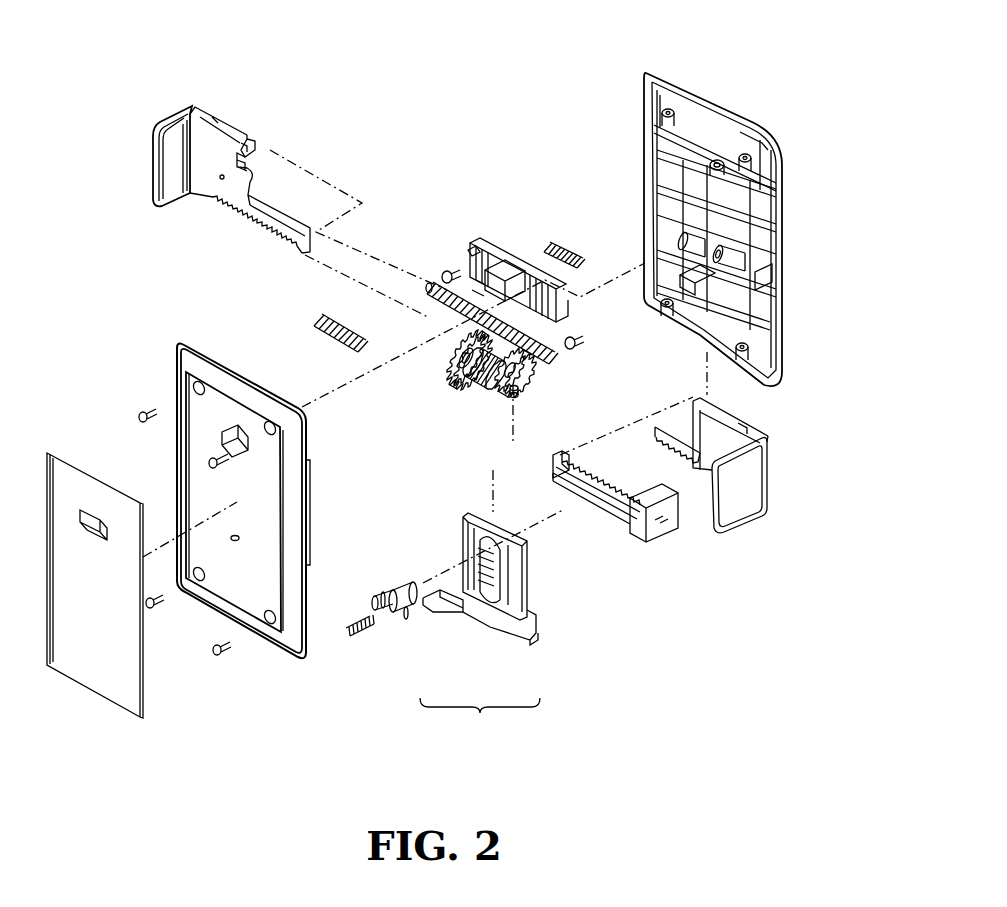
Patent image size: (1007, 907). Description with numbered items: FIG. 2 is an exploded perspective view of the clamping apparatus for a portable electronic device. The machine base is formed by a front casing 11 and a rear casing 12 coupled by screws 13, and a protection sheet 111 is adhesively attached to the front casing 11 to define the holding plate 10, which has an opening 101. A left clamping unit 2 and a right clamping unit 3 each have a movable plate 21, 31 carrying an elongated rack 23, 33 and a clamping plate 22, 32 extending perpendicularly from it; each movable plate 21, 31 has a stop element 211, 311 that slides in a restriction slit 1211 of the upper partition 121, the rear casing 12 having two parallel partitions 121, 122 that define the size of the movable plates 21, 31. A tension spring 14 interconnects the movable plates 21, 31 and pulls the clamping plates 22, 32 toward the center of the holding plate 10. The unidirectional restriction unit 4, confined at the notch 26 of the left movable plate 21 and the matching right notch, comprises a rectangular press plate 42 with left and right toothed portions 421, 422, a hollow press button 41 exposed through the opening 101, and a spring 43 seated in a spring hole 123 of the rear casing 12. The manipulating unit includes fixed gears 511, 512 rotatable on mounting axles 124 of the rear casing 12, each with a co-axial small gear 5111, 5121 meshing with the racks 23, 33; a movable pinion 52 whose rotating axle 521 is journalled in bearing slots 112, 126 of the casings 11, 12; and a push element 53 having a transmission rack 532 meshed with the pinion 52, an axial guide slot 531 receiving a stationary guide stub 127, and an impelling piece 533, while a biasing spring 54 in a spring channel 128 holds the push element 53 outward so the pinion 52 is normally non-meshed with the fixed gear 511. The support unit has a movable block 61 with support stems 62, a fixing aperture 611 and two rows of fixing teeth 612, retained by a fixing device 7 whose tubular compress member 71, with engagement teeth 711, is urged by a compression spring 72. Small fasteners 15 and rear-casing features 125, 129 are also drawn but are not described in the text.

The left clamping unit 2 is at (227, 55).
The movable plate 21 is at (200, 130).
The clamping plate 22 is at (170, 125).
The elongated rack 23 is at (240, 218).
The notch 26 is at (255, 172).
The stop element 211 is at (247, 137).
The unidirectional restriction unit 4 is at (555, 192).
The press button 41 is at (472, 248).
The press plate 42 is at (500, 268).
The spring 43 is at (560, 248).
The left toothed portion 421 is at (480, 292).
The right toothed portion 422 is at (550, 304).
The tension spring 14 is at (472, 250).
The screw 15 is at (443, 274).
The fixed gear 511 is at (447, 300).
The small gear 5111 is at (445, 355).
The fixed gear 512 is at (540, 375).
The small gear 5121 is at (514, 400).
The movable pinion 52 is at (443, 355).
The rotating axle 521 is at (480, 392).
The biasing spring 54 is at (325, 325).
The rear casing 12 is at (716, 207).
The upper partition 121 is at (698, 138).
The partition 122 is at (660, 180).
The spring hole 123 is at (722, 160).
The mounting axle 124 is at (656, 212).
The bearing seat 125 is at (780, 260).
The bearing slot 126 is at (762, 295).
The guide stub 127 is at (690, 322).
The spring channel 128 is at (660, 300).
The rib 129 is at (700, 325).
The restriction slit 1211 is at (778, 166).
The right clamping unit 3 is at (805, 447).
The movable plate 31 is at (750, 448).
The clamping plate 32 is at (752, 497).
The elongated rack 33 is at (705, 472).
The stop element 311 is at (702, 402).
The push element 53 is at (615, 496).
The axial guide slot 531 is at (620, 506).
The transmission rack 532 is at (602, 482).
The impelling piece 533 is at (570, 470).
The movable block 61 is at (525, 605).
The support stem 62 is at (430, 612).
The fixing aperture 611 is at (505, 556).
The fixing teeth 612 is at (502, 582).
The fixing device 7 is at (332, 528).
The tubular compress member 71 is at (405, 586).
The compression spring 72 is at (358, 622).
The engagement teeth 711 is at (383, 594).
The holding plate 10 is at (124, 585).
The opening 101 is at (240, 430).
The front casing 11 is at (195, 520).
The protection sheet 111 is at (142, 700).
The bearing slot 112 is at (233, 543).
The screws 13 is at (141, 412).